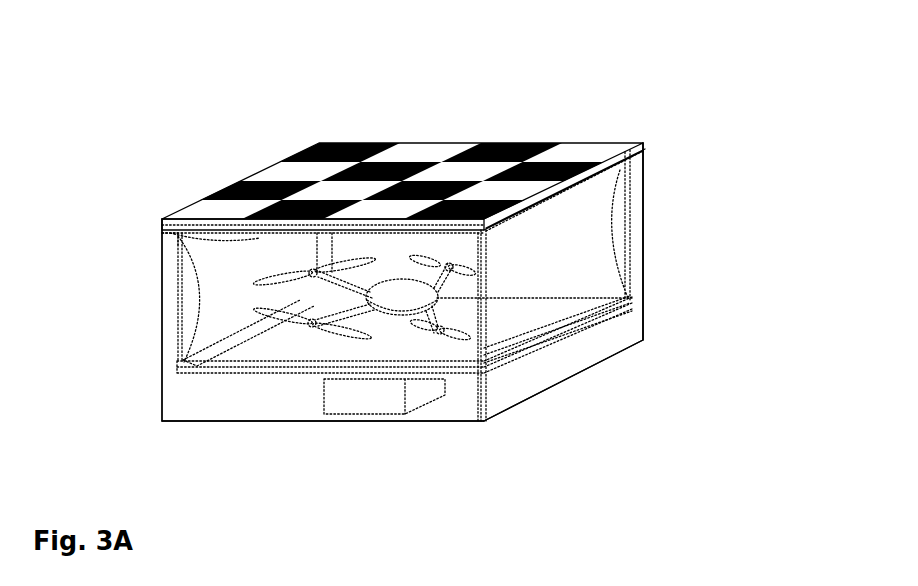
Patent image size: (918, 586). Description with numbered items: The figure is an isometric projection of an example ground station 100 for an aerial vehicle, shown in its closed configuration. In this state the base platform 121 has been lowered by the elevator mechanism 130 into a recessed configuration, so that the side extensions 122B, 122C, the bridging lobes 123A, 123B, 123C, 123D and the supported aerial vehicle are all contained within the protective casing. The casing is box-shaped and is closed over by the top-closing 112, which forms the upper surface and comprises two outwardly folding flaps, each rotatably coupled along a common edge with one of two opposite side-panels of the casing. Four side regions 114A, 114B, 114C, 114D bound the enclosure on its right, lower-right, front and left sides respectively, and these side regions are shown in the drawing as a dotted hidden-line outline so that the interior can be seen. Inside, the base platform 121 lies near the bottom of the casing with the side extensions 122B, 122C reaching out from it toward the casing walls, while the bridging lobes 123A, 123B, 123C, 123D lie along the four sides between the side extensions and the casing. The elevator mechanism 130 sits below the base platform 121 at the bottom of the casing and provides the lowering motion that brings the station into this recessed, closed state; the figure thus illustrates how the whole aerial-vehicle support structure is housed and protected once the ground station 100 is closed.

The ground station 100 is at (482, 113).
The top-closing 112 is at (285, 165).
The right side wall 114A is at (645, 225).
The bottom wall edge 114B is at (646, 331).
The front side wall 114C is at (458, 413).
The left side wall 114D is at (160, 300).
The base platform 121 is at (195, 370).
The side extension 122B is at (576, 305).
The side extension 122C is at (303, 343).
The bridging lobe 123A is at (625, 180).
The bridging lobe 123B is at (520, 360).
The bridging lobe 123C is at (187, 305).
The bridging lobe 123D is at (223, 253).
The elevator mechanism 130 is at (348, 393).